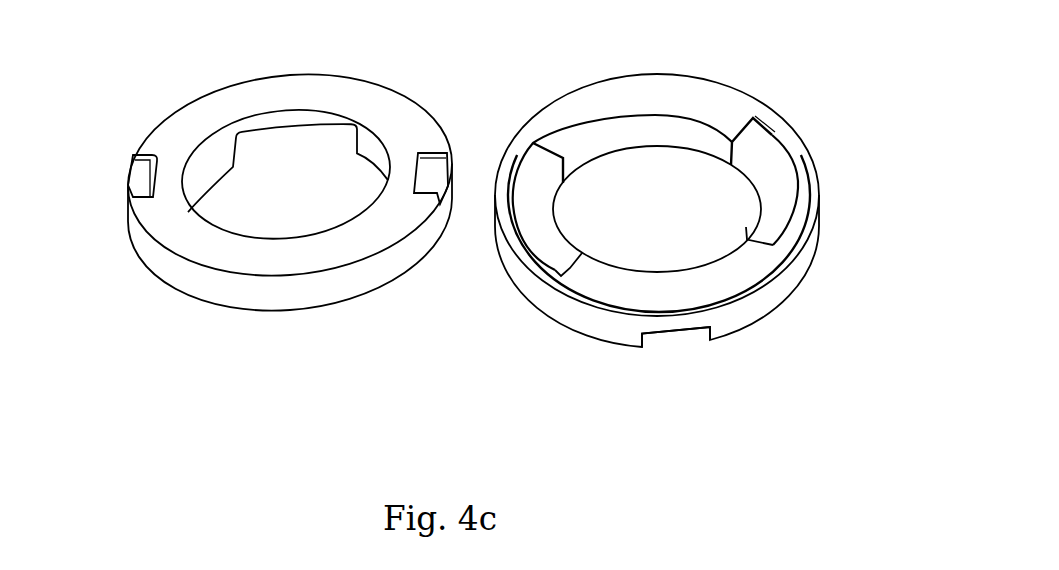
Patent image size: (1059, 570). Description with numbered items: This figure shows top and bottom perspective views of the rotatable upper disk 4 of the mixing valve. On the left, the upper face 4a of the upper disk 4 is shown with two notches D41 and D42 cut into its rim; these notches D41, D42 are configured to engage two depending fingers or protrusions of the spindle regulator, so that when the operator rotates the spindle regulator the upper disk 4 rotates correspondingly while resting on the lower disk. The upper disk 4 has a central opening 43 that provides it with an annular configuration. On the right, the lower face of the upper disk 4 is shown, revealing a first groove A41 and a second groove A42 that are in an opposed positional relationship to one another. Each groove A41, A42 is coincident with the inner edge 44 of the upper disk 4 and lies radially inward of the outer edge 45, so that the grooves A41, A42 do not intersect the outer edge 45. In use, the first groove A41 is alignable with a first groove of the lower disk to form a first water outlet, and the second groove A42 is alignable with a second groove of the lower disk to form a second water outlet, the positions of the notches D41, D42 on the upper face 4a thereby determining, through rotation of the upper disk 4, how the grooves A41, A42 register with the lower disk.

The upper disk 4 is at (456, 232).
The upper face 4a is at (175, 229).
The central opening 43 is at (290, 215).
The inner edge 44 is at (653, 135).
The outer edge 45 is at (792, 273).
The notch D41 is at (138, 170).
The notch D42 is at (442, 168).
The first groove A41 is at (535, 183).
The second groove A42 is at (752, 163).